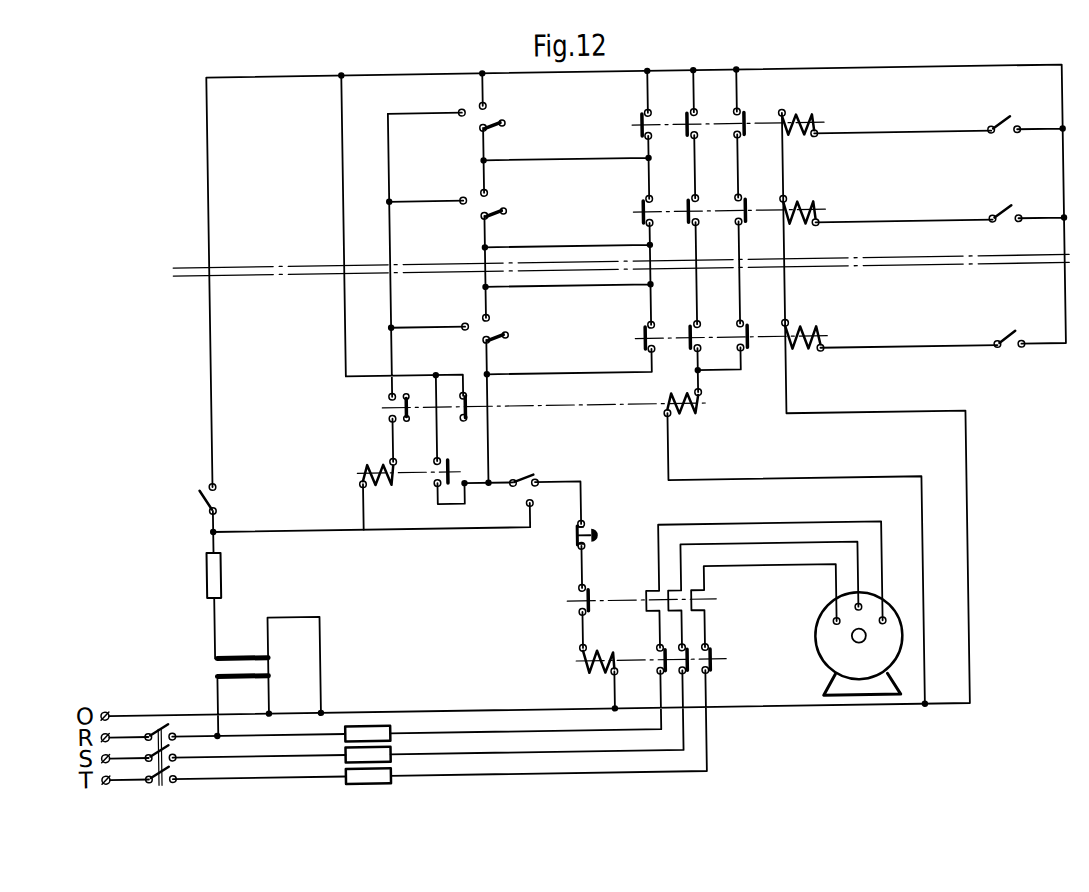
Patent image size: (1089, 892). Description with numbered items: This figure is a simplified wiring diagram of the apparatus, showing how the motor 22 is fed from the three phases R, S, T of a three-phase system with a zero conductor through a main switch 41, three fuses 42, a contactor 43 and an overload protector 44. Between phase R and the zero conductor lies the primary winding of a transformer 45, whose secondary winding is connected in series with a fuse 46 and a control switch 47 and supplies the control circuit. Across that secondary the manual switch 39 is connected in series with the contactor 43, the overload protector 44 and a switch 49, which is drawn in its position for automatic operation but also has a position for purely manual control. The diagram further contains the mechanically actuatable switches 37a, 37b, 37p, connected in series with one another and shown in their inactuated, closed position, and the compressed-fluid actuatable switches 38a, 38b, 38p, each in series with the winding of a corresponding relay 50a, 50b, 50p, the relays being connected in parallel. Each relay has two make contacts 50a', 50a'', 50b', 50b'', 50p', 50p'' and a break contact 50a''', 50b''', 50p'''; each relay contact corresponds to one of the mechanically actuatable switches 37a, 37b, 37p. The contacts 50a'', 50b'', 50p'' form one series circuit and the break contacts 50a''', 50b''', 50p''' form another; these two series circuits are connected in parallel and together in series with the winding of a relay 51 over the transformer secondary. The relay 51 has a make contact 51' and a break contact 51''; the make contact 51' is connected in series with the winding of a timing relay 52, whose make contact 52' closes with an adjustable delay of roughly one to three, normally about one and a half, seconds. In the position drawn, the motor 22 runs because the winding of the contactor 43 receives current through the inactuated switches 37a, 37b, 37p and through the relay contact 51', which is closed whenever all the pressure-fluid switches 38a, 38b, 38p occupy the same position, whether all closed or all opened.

The motor 22 is at (812, 635).
The mechanically actuatable switch 37a is at (507, 118).
The mechanically actuatable switch 37b is at (507, 206).
The mechanically actuatable switch 37p is at (507, 330).
The compressed fluid actuatable switch 38a is at (1014, 118).
The compressed fluid actuatable switch 38b is at (1014, 207).
The compressed fluid actuatable switch 38p is at (1016, 333).
The manual switch 39 is at (592, 529).
The main switch 41 is at (165, 777).
The fuses 42 is at (341, 773).
The contactor 43 is at (610, 658).
The overload protector 44 is at (616, 600).
The transformer 45 is at (216, 669).
The fuse 46 is at (205, 572).
The control switch 47 is at (203, 505).
The switch 49 is at (528, 477).
The relay 50a is at (825, 109).
The make contact 50a' is at (619, 107).
The make contact 50a'' is at (673, 106).
The break contact 50a''' is at (770, 103).
The relay 50b is at (825, 196).
The make contact 50b' is at (624, 191).
The make contact 50b'' is at (677, 189).
The break contact 50b''' is at (787, 181).
The relay 50p is at (832, 321).
The make contact 50p' is at (625, 323).
The make contact 50p'' is at (678, 312).
The break contact 50p''' is at (789, 311).
The relay 51 is at (696, 415).
The make contact 51' is at (411, 421).
The break contact 51'' is at (445, 376).
The timing relay 52 is at (368, 474).
The make contact 52' is at (471, 445).